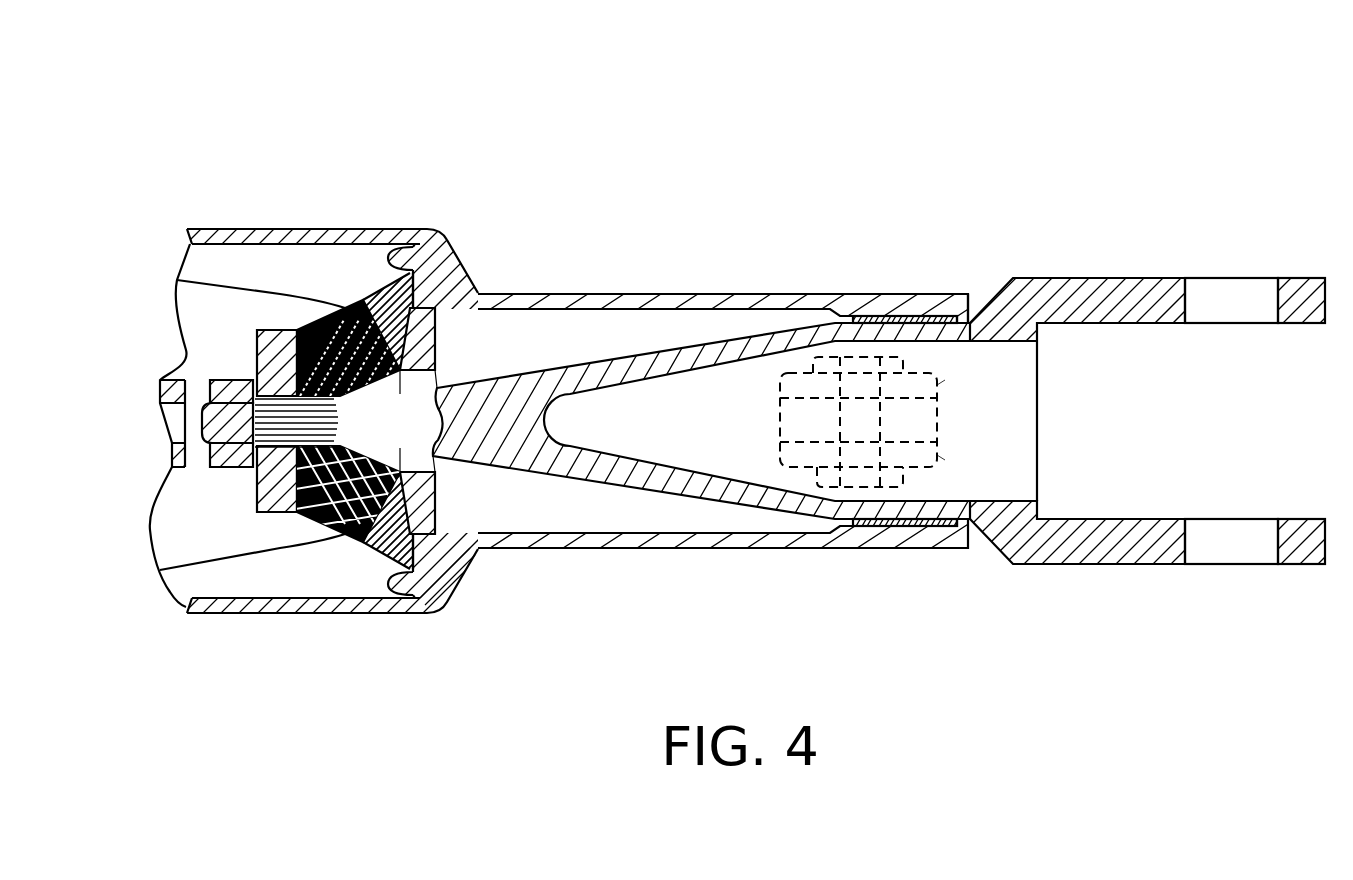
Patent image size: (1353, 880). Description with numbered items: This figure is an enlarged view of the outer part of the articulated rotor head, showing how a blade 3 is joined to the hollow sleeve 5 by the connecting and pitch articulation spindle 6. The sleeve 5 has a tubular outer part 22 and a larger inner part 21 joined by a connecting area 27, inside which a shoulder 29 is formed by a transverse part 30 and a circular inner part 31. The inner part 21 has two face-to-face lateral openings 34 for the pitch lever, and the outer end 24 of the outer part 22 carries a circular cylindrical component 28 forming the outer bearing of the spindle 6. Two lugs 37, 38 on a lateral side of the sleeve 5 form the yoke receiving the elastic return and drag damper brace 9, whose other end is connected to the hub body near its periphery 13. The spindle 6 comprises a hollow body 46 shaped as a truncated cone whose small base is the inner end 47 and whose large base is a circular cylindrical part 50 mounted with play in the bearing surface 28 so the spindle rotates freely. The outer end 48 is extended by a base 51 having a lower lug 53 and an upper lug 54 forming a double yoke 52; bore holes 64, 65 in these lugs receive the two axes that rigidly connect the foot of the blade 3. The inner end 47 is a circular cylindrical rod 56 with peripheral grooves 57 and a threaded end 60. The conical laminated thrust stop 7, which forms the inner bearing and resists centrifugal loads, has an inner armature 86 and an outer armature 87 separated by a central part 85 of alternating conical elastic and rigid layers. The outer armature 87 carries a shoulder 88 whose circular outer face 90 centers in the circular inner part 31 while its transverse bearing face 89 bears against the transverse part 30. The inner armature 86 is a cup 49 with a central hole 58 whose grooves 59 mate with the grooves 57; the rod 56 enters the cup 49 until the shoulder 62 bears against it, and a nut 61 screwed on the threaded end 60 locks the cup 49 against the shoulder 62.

The blade 3 is at (1258, 427).
The hollow sleeve 5 is at (605, 293).
The connecting and pitch articulation spindle 6 is at (631, 492).
The conical laminated thrust stop 7 is at (379, 568).
The elastic return and drag damper brace 9 is at (780, 422).
The periphery 13 is at (177, 358).
The inner part 21 is at (207, 229).
The outer part 22 is at (770, 292).
The outer end 24 is at (968, 296).
The connecting area 27 is at (440, 235).
The circular cylindrical component 28 is at (878, 315).
The shoulder 29 is at (392, 262).
The transverse part 30 is at (455, 264).
The circular inner part 31 is at (473, 313).
The lateral openings 34 is at (247, 580).
The lug 37 is at (940, 386).
The lug 38 is at (940, 456).
The hollow body 46 is at (714, 343).
The inner end 47 is at (343, 433).
The outer end 48 is at (983, 538).
The cup 49 is at (282, 488).
The circular cylindrical part 50 is at (863, 530).
The base 51 is at (985, 550).
The double yoke 52 is at (1100, 286).
The lug 53 is at (1300, 288).
The lug 54 is at (1290, 568).
The circular cylindrical rod 56 is at (256, 488).
The grooves 57 is at (290, 412).
The central hole 58 is at (258, 522).
The grooves 59 is at (290, 455).
The threaded end 60 is at (222, 428).
The nut 61 is at (237, 383).
The shoulder 62 is at (445, 541).
The bore hole 64 is at (1232, 296).
The bore hole 65 is at (1220, 550).
The central part 85 is at (340, 307).
The inner armature 86 is at (260, 344).
The outer armature 87 is at (420, 540).
The shoulder 88 is at (440, 538).
The transverse bearing face 89 is at (388, 285).
The circular outer face 90 is at (437, 343).